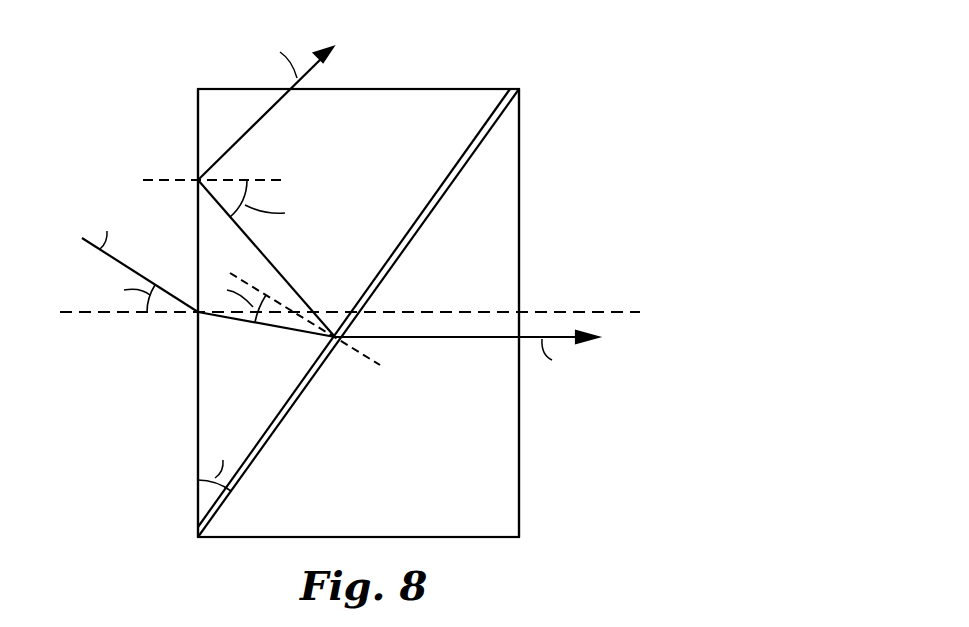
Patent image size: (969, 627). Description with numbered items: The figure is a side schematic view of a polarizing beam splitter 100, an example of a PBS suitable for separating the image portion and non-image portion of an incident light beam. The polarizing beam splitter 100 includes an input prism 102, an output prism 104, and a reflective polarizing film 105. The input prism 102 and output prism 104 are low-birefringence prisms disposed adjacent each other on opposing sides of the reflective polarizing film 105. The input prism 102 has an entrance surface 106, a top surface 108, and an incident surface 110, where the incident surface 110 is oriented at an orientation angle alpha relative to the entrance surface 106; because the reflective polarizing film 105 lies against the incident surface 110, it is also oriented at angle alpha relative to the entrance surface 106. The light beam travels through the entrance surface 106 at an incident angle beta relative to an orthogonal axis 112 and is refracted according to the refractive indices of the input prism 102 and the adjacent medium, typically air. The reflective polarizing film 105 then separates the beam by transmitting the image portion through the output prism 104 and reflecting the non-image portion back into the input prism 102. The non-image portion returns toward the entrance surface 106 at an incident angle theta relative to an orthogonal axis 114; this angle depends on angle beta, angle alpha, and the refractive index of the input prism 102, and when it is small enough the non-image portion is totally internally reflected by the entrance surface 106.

The polarizing beam splitter 100 is at (587, 83).
The input prism 102 is at (227, 97).
The output prism 104 is at (503, 481).
The reflective polarizing film 105 is at (252, 465).
The entrance surface 106 is at (198, 416).
The top surface 108 is at (477, 89).
The incident surface 110 is at (475, 137).
The orthogonal axis 112 is at (78, 314).
The orthogonal axis 114 is at (160, 180).